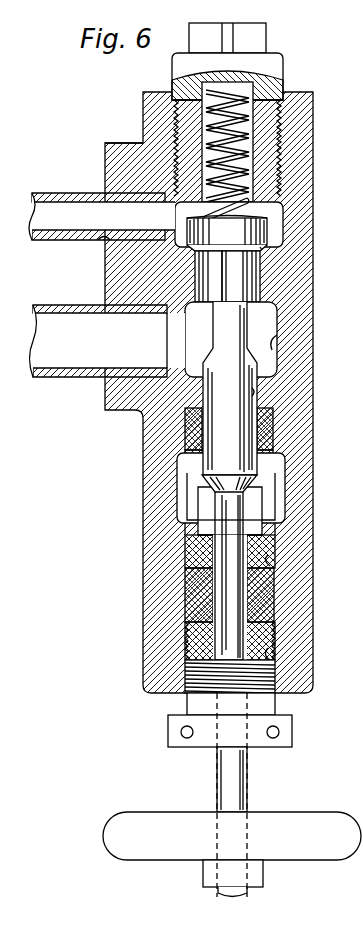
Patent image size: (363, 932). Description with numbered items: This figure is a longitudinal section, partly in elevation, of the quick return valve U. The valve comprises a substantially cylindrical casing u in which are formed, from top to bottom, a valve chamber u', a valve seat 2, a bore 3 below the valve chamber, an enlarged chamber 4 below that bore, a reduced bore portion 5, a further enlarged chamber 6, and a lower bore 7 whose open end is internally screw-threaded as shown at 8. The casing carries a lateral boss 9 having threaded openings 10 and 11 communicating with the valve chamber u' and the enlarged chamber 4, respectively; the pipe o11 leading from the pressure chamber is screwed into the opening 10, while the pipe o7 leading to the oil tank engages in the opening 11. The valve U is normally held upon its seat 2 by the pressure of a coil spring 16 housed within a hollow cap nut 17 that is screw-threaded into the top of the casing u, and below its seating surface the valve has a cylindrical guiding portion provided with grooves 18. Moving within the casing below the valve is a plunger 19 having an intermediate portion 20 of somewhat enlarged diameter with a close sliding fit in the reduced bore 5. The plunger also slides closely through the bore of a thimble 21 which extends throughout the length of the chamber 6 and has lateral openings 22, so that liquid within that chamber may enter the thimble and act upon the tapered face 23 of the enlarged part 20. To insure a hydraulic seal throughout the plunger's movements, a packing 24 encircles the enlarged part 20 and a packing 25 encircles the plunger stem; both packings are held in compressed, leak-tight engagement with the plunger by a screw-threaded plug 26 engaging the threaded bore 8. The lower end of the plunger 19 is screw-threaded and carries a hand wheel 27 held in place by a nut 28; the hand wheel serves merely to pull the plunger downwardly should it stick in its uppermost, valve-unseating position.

The casing u is at (219, 392).
The quick return valve U is at (262, 232).
The valve chamber u' is at (272, 187).
The valve seat 2 is at (262, 250).
The bore 3 is at (250, 310).
The enlarged chamber 4 is at (272, 345).
The reduced bore portion 5 is at (258, 393).
The enlarged chamber 6 is at (280, 470).
The bore 7 is at (270, 578).
The screw-threaded open end 8 is at (270, 662).
The lateral boss 9 is at (106, 152).
The threaded opening 10 is at (100, 242).
The threaded opening 11 is at (133, 372).
The coil spring 16 is at (240, 140).
The hollow cap nut 17 is at (281, 66).
The grooves 18 is at (222, 270).
The plunger 19 is at (225, 549).
The intermediate portion 20 is at (230, 388).
The thimble 21 is at (210, 533).
The lateral openings 22 is at (188, 490).
The tapered face 23 is at (236, 472).
The packing 24 is at (272, 420).
The packing 25 is at (265, 600).
The screw-threaded plug 26 is at (272, 690).
The hand wheel 27 is at (232, 836).
The nut 28 is at (258, 868).
The pipe o11 is at (102, 227).
The pipe o7 is at (108, 354).